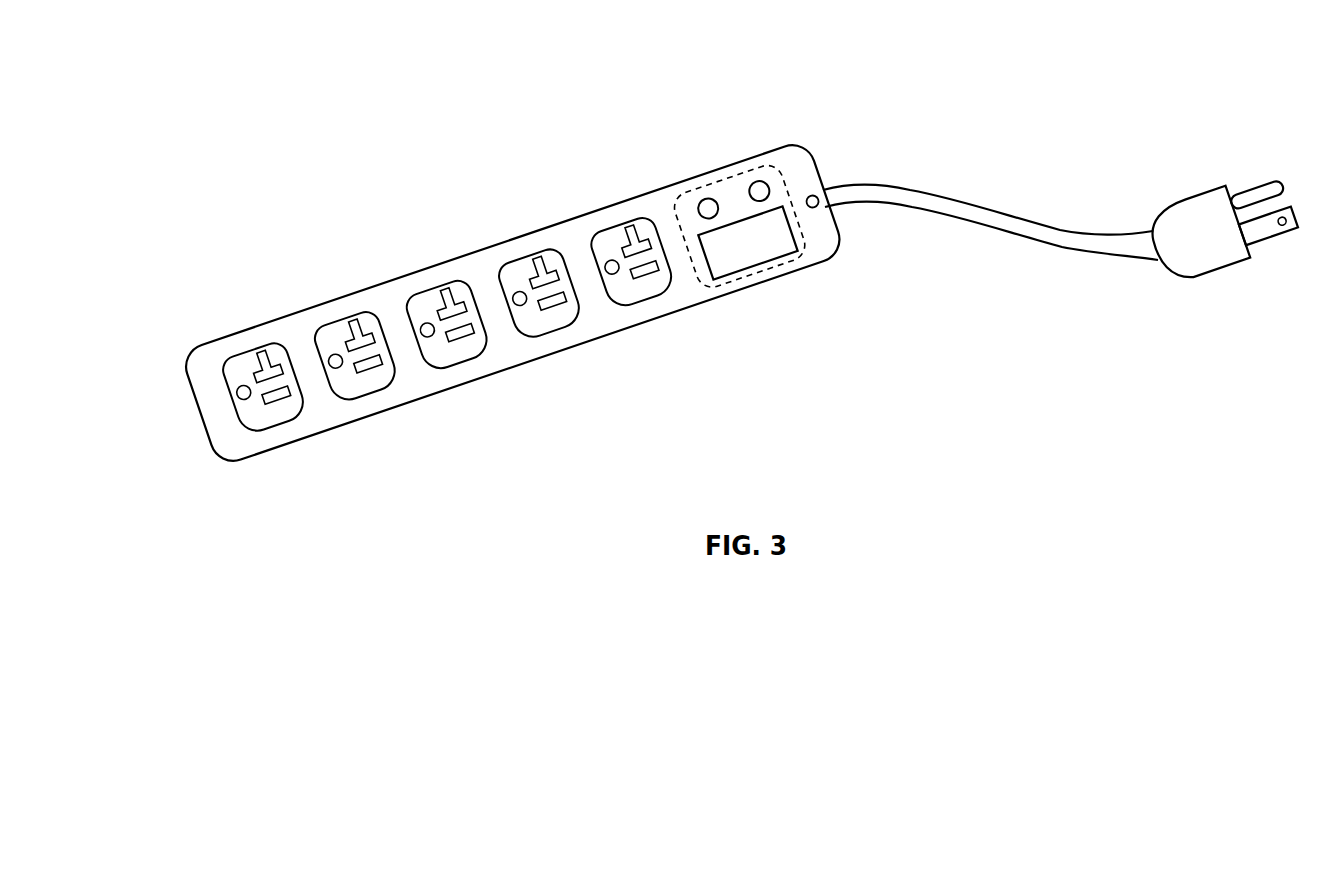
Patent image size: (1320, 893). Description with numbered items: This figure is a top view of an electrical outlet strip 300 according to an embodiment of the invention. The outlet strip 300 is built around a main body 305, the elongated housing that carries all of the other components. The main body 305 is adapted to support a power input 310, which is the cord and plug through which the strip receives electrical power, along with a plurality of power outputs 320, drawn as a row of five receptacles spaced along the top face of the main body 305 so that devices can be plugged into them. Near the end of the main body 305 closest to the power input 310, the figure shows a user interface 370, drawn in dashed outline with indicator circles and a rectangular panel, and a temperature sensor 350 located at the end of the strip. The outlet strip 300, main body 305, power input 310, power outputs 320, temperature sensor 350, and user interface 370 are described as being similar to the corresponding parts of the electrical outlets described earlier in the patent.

The electrical outlet strip 300 is at (182, 84).
The main body 305 is at (463, 384).
The power input 310 is at (1188, 198).
The power outputs 320 is at (249, 348).
The temperature sensor 350 is at (818, 196).
The user interface 370 is at (773, 270).